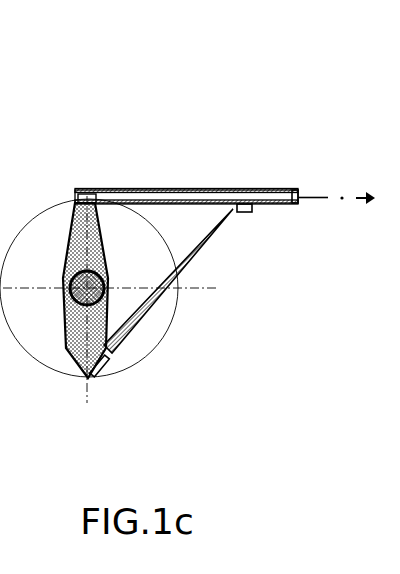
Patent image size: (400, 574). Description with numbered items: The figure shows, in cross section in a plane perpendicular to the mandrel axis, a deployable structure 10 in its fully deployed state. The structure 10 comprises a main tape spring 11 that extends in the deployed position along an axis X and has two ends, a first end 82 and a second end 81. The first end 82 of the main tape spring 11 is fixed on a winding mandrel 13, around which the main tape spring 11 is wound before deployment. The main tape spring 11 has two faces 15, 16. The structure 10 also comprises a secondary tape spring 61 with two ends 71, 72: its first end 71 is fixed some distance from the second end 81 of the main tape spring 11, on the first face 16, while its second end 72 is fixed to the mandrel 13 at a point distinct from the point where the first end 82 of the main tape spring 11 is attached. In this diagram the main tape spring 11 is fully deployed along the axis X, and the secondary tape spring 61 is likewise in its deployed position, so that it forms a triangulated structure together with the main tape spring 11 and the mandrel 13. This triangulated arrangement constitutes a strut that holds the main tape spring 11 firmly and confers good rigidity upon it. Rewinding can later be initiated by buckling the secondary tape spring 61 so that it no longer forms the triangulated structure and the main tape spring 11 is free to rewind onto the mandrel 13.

The deployable structure 10 is at (142, 58).
The main tape spring 11 is at (182, 190).
The winding mandrel 13 is at (68, 350).
The face 15 is at (243, 189).
The first face 16 is at (280, 204).
The secondary tape spring 61 is at (193, 262).
The first end of the secondary tape spring 71 is at (242, 213).
The second end of the secondary tape spring 72 is at (108, 379).
The second end of the main tape spring 81 is at (297, 189).
The first end of the main tape spring 82 is at (77, 189).
The axis X is at (336, 185).